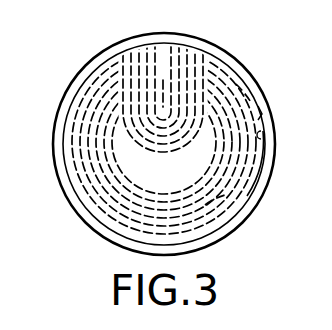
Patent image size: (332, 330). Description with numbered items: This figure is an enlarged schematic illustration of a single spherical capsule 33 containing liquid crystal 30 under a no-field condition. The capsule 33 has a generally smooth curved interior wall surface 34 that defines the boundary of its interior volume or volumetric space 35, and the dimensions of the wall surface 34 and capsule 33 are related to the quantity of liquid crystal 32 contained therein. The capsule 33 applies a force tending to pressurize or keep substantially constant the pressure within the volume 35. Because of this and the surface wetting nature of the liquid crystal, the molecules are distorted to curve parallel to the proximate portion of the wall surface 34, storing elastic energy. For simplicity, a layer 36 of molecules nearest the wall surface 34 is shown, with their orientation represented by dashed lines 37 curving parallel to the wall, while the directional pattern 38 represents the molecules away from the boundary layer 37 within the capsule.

The liquid crystal 30 is at (93, 51).
The liquid crystal 32 is at (234, 221).
The capsule 33 is at (270, 177).
The interior wall surface 34 is at (261, 135).
The volumetric space 35 is at (216, 212).
The layer of liquid crystal molecules 36 is at (266, 113).
The dashed lines 37 is at (250, 98).
The directional pattern 38 is at (238, 91).